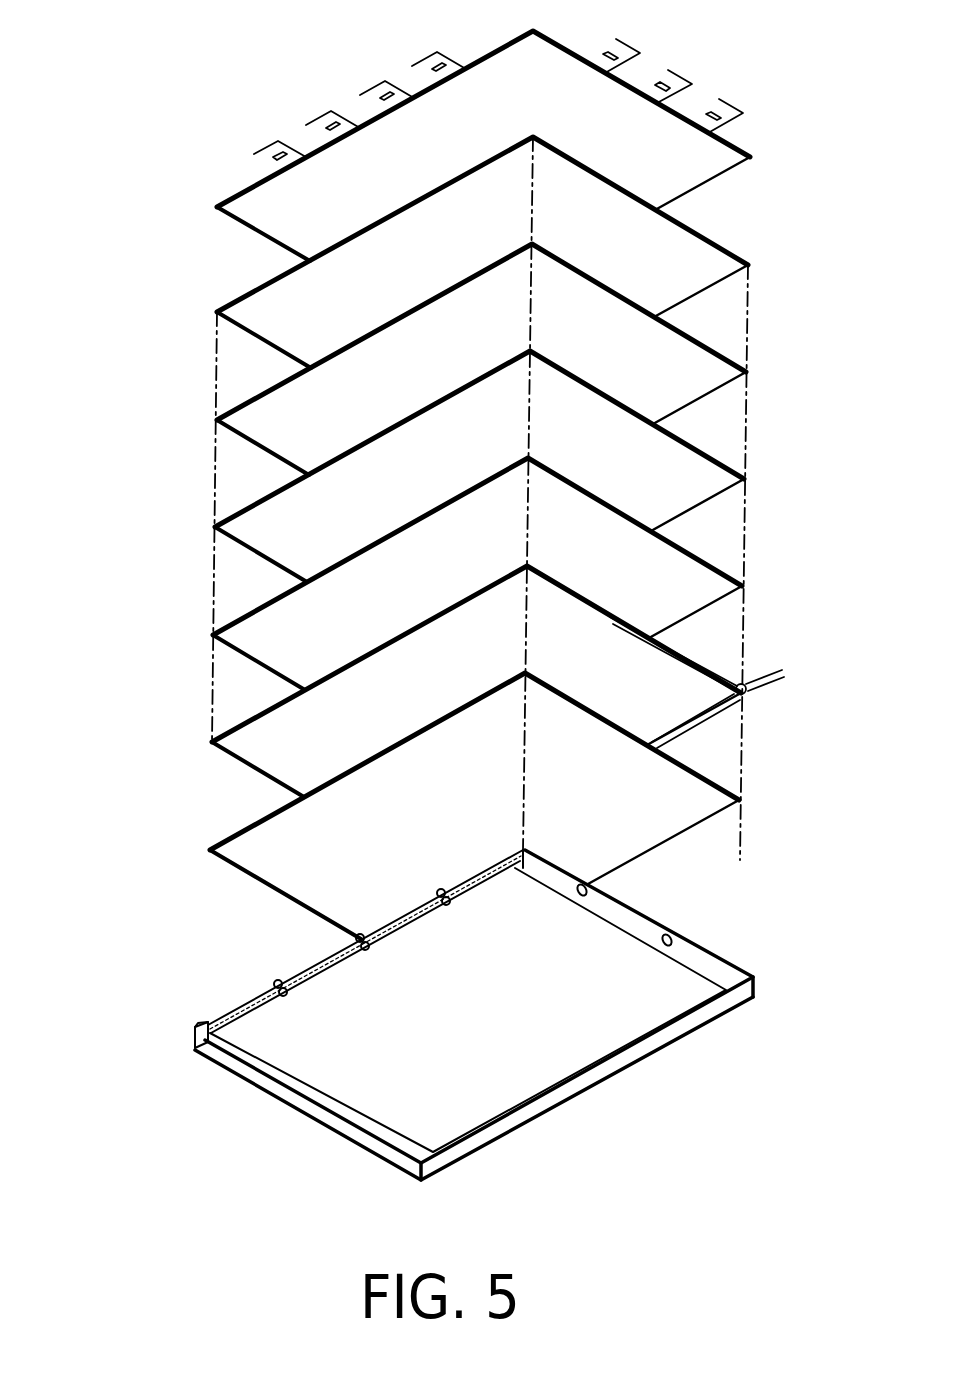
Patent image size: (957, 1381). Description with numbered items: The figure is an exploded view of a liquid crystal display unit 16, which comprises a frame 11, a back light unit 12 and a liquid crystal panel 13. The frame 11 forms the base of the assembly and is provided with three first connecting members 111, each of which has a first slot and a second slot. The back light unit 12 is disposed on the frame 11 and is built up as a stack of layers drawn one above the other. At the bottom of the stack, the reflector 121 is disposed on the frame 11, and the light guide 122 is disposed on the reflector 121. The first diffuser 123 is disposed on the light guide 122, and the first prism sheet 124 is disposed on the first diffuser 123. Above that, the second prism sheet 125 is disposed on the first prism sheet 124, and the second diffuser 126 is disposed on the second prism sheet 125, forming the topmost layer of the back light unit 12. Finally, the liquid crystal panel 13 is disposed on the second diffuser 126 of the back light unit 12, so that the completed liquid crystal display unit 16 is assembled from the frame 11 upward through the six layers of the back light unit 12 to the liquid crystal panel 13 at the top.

The liquid crystal display unit 16 is at (148, 62).
The liquid crystal panel 13 is at (728, 140).
The back light unit 12 is at (104, 347).
The second diffuser 126 is at (266, 353).
The second prism sheet 125 is at (267, 457).
The first prism sheet 124 is at (268, 565).
The first diffuser 123 is at (265, 672).
The light guide 122 is at (263, 778).
The reflector 121 is at (263, 884).
The frame 11 is at (428, 1015).
The first connecting member 111 is at (272, 987).